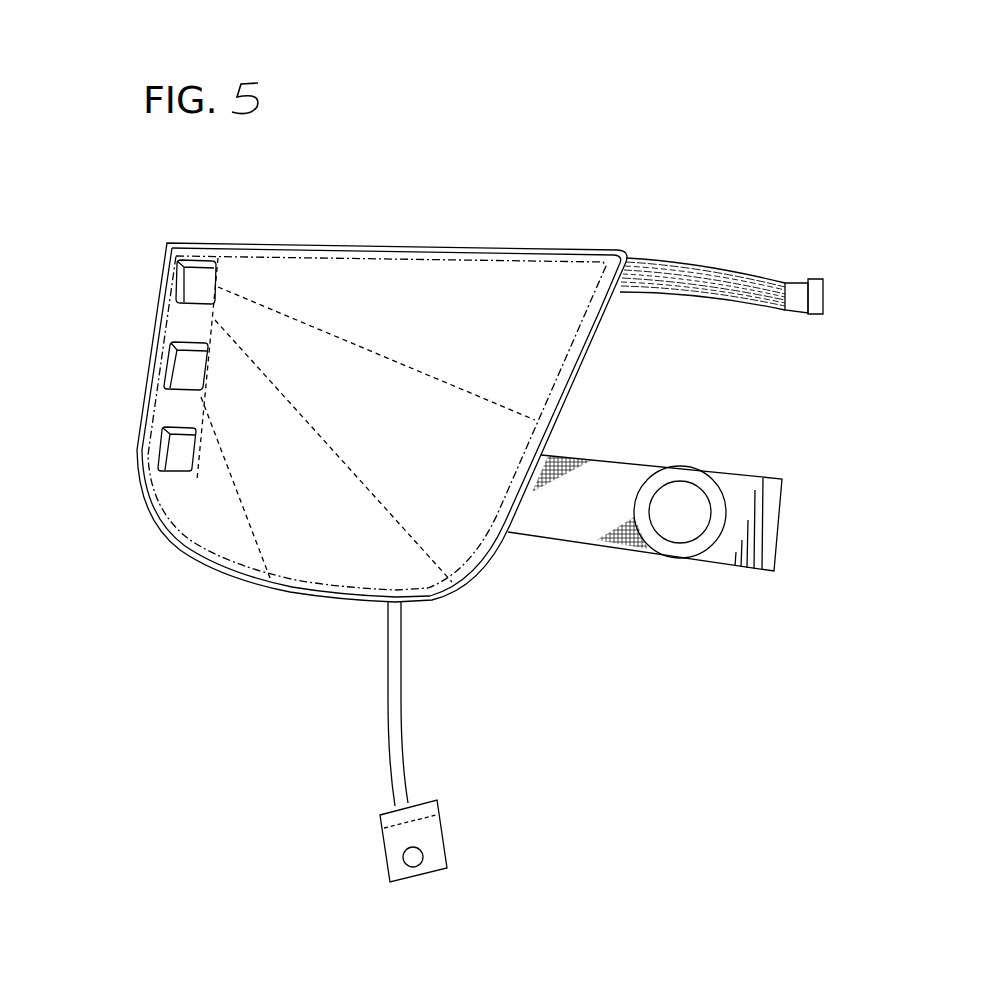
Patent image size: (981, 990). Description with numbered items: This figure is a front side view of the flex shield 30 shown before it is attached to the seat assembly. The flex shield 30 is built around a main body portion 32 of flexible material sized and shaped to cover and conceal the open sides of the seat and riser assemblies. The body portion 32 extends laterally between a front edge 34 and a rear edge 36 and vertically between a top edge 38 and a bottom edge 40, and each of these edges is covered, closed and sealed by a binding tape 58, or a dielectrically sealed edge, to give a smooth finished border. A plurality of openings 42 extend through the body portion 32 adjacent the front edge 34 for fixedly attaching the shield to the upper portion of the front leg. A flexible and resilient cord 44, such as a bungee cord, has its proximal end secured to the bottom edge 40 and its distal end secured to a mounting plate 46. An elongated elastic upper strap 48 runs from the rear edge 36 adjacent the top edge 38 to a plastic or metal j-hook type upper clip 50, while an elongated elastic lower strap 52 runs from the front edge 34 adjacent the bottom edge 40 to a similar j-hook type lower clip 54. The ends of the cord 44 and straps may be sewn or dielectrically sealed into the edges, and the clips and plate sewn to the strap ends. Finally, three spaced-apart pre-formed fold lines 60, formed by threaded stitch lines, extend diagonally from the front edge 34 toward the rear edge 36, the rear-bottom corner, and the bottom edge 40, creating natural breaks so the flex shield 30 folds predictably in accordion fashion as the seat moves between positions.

The flex shield 30 is at (497, 140).
The main body portion 32 is at (330, 247).
The front edge 34 is at (140, 405).
The rear edge 36 is at (585, 386).
The top edge 38 is at (440, 249).
The bottom edge 40 is at (272, 590).
The openings 42 is at (182, 278).
The cord 44 is at (401, 700).
The mounting plate 46 is at (430, 838).
The upper strap 48 is at (695, 268).
The upper clip 50 is at (815, 280).
The lower strap 52 is at (585, 530).
The lower clip 54 is at (717, 562).
The binding tape 58 is at (573, 258).
The fold lines 60 is at (485, 394).